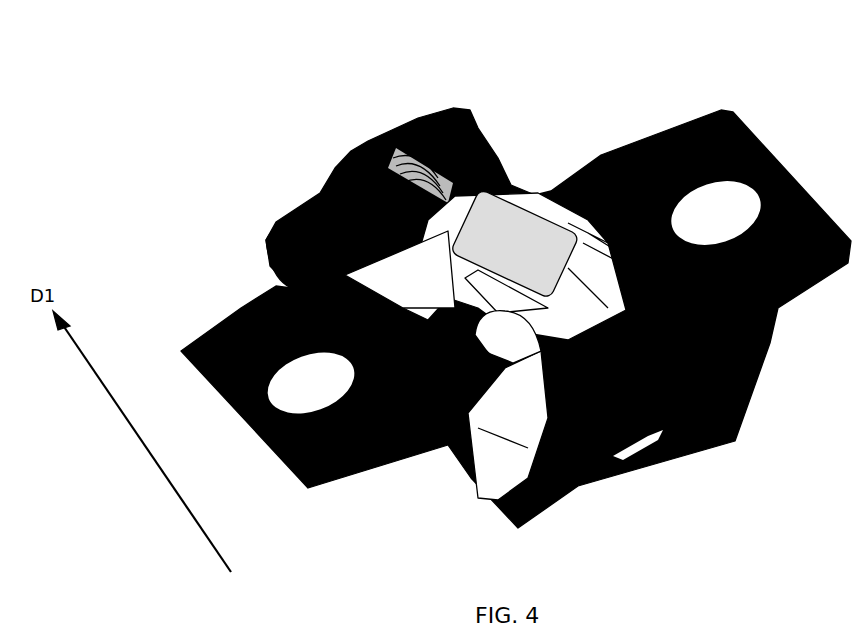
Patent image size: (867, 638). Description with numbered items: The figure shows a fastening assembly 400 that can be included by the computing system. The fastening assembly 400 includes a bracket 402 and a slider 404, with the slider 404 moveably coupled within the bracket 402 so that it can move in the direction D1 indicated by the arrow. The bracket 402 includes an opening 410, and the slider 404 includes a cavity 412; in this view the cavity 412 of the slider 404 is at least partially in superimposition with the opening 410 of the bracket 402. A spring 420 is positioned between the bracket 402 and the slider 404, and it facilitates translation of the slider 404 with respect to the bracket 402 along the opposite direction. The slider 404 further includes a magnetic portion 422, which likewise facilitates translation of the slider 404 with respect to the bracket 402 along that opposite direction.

The fastening assembly 400 is at (176, 104).
The bracket 402 is at (270, 214).
The slider 404 is at (512, 190).
The opening 410 is at (510, 335).
The cavity 412 is at (477, 330).
The spring 420 is at (445, 187).
The magnetic portion 422 is at (495, 445).